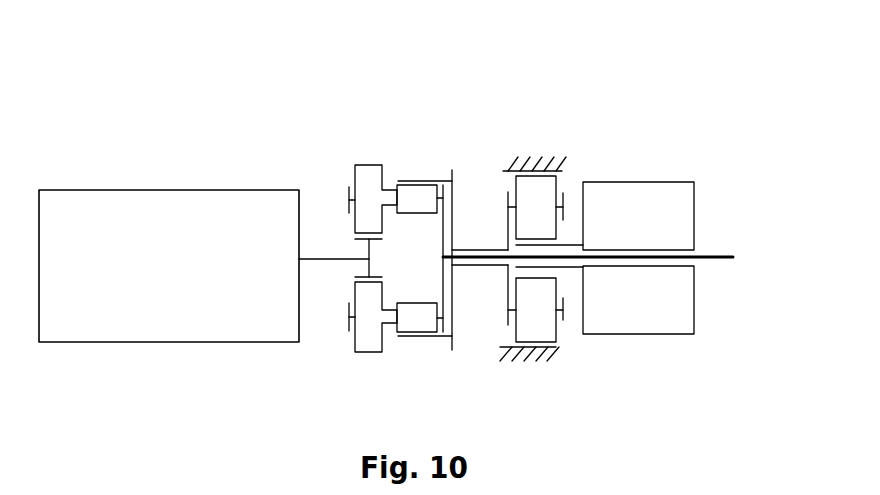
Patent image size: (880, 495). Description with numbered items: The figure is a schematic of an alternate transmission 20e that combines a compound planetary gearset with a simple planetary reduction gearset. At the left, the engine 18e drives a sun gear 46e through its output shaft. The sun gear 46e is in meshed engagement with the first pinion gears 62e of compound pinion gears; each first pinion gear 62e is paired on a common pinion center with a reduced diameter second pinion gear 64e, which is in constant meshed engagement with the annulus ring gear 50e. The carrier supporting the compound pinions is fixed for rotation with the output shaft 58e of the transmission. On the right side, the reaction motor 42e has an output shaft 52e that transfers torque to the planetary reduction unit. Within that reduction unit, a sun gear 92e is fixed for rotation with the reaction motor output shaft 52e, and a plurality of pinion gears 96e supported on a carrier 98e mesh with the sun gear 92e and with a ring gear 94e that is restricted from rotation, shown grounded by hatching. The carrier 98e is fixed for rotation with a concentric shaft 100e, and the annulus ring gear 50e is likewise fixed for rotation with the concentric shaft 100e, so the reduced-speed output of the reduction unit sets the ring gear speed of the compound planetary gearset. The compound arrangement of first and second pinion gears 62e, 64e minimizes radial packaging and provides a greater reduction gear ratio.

The engine 18e is at (172, 190).
The transmission 20e is at (636, 95).
The sun gear 46e is at (363, 238).
The first pinion gear 62e is at (370, 172).
The second pinion gear 64e is at (421, 184).
The annulus ring gear 50e is at (438, 180).
The reaction motor output shaft 52e is at (575, 250).
The concentric shaft 100e is at (456, 250).
The carrier 98e is at (508, 219).
The pinion gear 96e is at (516, 331).
The ring gear 94e is at (503, 171).
The sun gear 92e is at (548, 272).
The reaction motor 42e is at (694, 200).
The output shaft 58e is at (733, 259).